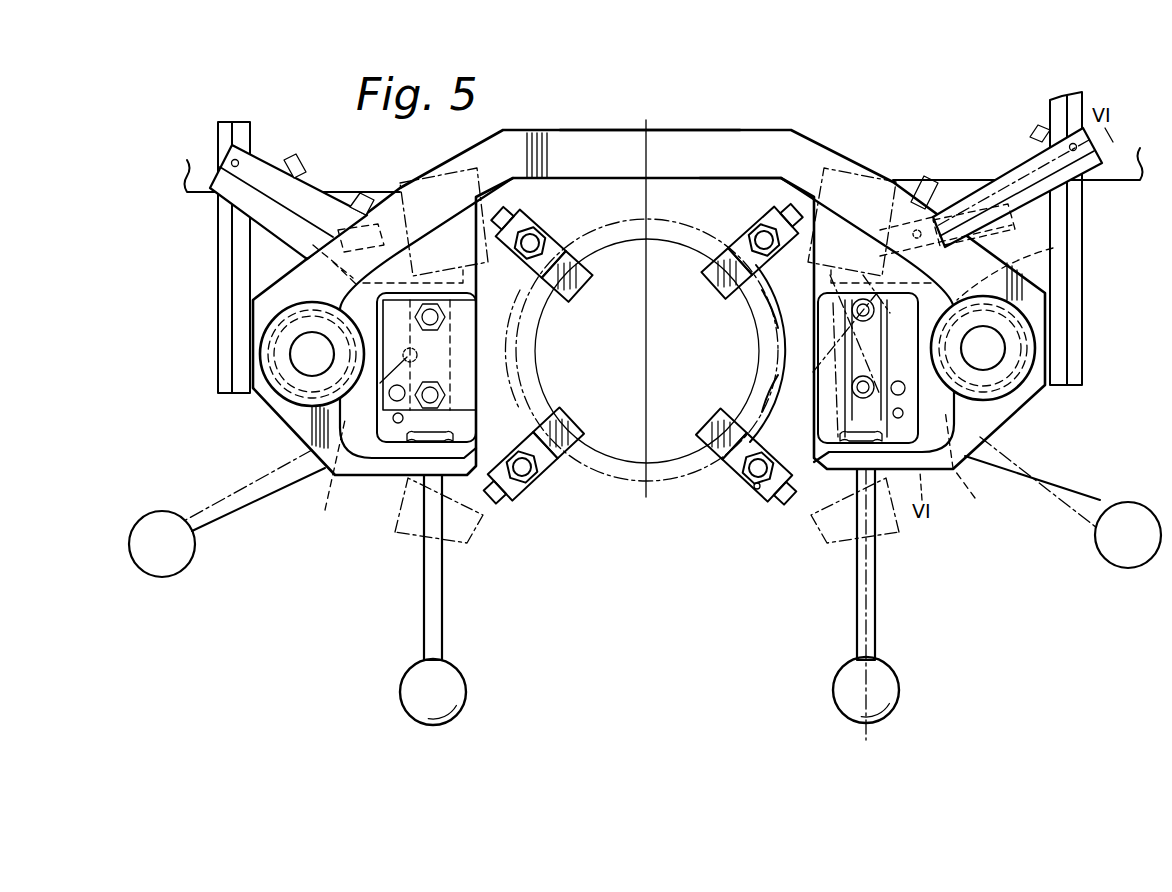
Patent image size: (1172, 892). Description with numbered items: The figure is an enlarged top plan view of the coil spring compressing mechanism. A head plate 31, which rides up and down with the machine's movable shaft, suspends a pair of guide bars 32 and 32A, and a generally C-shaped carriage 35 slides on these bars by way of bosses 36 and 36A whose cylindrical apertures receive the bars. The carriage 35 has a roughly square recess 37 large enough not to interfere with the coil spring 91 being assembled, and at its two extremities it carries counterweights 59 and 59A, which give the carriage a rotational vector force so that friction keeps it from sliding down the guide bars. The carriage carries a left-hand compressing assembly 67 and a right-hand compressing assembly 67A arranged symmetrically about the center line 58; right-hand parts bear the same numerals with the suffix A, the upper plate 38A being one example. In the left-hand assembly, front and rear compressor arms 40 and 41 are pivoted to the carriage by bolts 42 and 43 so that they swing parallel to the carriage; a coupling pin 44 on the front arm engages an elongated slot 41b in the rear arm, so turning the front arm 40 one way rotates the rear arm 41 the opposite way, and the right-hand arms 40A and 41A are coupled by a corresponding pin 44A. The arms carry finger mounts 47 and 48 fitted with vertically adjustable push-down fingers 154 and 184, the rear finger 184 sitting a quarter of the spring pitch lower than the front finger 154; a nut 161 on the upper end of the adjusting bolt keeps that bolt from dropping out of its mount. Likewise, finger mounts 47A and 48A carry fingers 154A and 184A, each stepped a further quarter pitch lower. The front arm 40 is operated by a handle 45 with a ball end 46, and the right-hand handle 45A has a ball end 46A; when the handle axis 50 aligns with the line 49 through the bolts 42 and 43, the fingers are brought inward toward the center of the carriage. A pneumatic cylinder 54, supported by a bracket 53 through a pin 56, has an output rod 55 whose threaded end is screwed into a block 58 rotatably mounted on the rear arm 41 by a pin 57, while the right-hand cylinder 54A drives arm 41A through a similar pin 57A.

The head plate 31 is at (1118, 138).
The guide bar 32 is at (993, 348).
The guide bar 32A is at (297, 360).
The carriage 35 is at (688, 132).
The boss 36 is at (1020, 323).
The boss 36A is at (273, 325).
The recess 37 is at (757, 176).
The upper plate 38A is at (513, 352).
The front compressor arm 40 is at (806, 480).
The front compressor arm 40A is at (485, 470).
The rear compressor arm 41 is at (793, 262).
The rear compressor arm 41A is at (475, 258).
The elongated aperture or slot 41b is at (1080, 250).
The bolt 42 is at (800, 387).
The bolt 43 is at (812, 314).
The coupling pin 44 is at (971, 465).
The coupling pin 44A is at (322, 479).
The handle 45 is at (876, 636).
The operating handle 45A is at (444, 603).
The ball end 46 is at (898, 690).
The ball end 46A is at (465, 690).
The finger mount 47 is at (752, 480).
The finger mount 47A is at (543, 485).
The finger mount 48 is at (748, 232).
The finger mount 48A is at (553, 238).
The line 49 is at (812, 372).
The axis of the handle 50 is at (872, 578).
The bracket 53 is at (1090, 188).
The pneumatic cylinder 54 is at (980, 182).
The pneumatic cylinder 54A is at (267, 170).
The output rod 55 is at (917, 232).
The pin 56 is at (1073, 148).
The pin 57 is at (1000, 438).
The pin 57A is at (284, 436).
The block 58 is at (643, 128).
The counterweight 59 is at (1082, 224).
The counterweight 59A is at (227, 242).
The left-hand compressing assembly 67 is at (810, 350).
The right-hand compressing assembly 67A is at (501, 402).
The coil spring 91 is at (627, 483).
The push-down finger 154 is at (718, 453).
The push-down finger 154A is at (572, 430).
The nut 161 is at (757, 488).
The push-down finger 184 is at (720, 270).
The push-down finger 184A is at (578, 285).